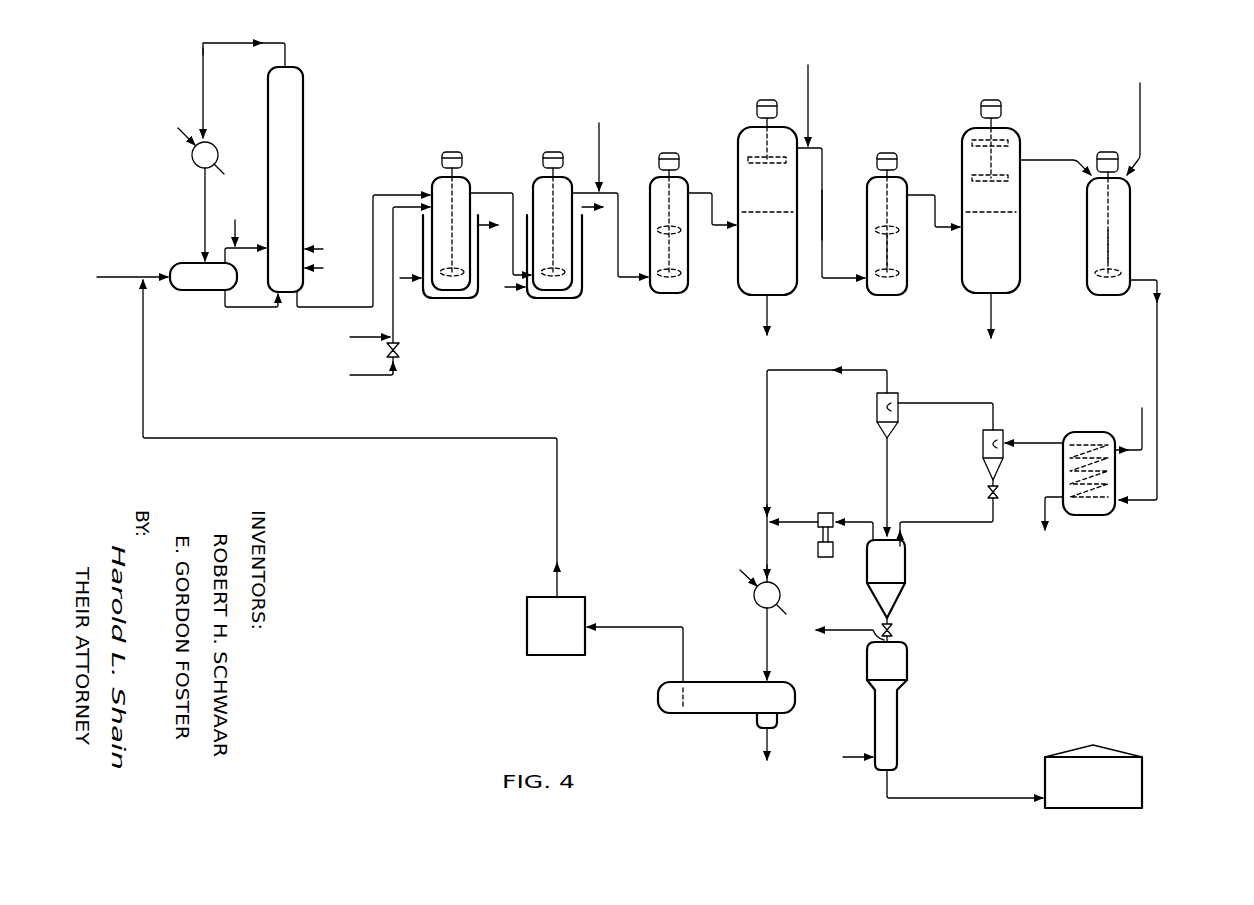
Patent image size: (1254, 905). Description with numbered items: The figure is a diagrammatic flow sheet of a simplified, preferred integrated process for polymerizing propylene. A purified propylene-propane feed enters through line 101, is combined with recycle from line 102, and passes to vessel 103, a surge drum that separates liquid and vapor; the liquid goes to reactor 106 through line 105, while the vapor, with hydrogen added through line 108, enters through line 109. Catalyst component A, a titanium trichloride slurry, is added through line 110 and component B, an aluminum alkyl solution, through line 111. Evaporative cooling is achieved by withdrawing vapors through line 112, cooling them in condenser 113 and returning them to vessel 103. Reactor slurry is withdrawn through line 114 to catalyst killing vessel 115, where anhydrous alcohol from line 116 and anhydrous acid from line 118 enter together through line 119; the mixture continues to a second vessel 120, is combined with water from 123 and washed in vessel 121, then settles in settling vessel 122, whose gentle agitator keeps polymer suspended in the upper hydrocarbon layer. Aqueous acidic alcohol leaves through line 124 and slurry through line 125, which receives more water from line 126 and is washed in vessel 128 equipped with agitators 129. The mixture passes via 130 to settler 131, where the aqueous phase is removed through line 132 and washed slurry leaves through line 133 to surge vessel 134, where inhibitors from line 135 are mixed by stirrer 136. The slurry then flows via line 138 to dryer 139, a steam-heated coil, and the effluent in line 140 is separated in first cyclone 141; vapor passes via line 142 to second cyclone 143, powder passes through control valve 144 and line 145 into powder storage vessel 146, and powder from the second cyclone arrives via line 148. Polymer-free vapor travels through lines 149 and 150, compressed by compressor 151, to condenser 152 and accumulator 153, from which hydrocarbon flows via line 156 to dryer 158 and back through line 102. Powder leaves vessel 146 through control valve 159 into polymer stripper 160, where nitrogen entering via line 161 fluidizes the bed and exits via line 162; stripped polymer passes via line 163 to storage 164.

The feed line 101 is at (105, 278).
The recycle line 102 is at (145, 318).
The surge vessel 103 is at (185, 263).
The liquid feed line 105 is at (233, 307).
The reactor 106 is at (305, 152).
The hydrogen line 108 is at (226, 205).
The vapor feed line 109 is at (232, 250).
The catalyst component A line 110 is at (330, 233).
The catalyst component B line 111 is at (356, 270).
The vapor withdrawal line 112 is at (250, 42).
The condenser 113 is at (194, 163).
The slurry withdrawal line 114 is at (356, 306).
The catalyst killing vessel 115 is at (426, 178).
The alcohol line 116 is at (371, 337).
The acid line 118 is at (371, 375).
The combined acid and alcohol line 119 is at (395, 323).
The second catalyst killing vessel 120 is at (534, 178).
The washing vessel 121 is at (652, 178).
The settling vessel 122 is at (737, 142).
The water line 123 is at (599, 136).
The alcohol layer withdrawal line 124 is at (766, 321).
The slurry withdrawal line 125 is at (822, 152).
The water line 126 is at (808, 95).
The washing vessel 128 is at (868, 186).
The agitators 129 is at (879, 262).
The transfer line 130 is at (926, 196).
The settler 131 is at (962, 168).
The aqueous phase removal line 132 is at (990, 322).
The washed slurry line 133 is at (1043, 162).
The surge vessel 134 is at (1087, 208).
The inhibitor line 135 is at (1141, 108).
The stirrer 136 is at (1103, 240).
The dryer feed line 138 is at (1158, 386).
The dryer 139 is at (1087, 432).
The dryer effluent line 140 is at (1054, 443).
The first cyclone 141 is at (995, 430).
The vapor line 142 is at (978, 403).
The second cyclone 143 is at (876, 414).
The control valve 144 is at (1000, 491).
The powder line 145 is at (955, 517).
The powder storage vessel 146 is at (905, 558).
The powder line 148 is at (887, 478).
The vapor line 149 is at (766, 395).
The vapor line 150 is at (845, 510).
The compressor 151 is at (825, 556).
The condenser 152 is at (753, 600).
The accumulator 153 is at (696, 716).
The hydrocarbon withdrawal line 156 is at (652, 626).
The dryer 158 is at (527, 610).
The control valve 159 is at (894, 629).
The polymer stripper 160 is at (907, 670).
The nitrogen inlet line 161 is at (855, 757).
The stripper outlet line 162 is at (848, 628).
The stripped polymer line 163 is at (962, 798).
The storage 164 is at (1045, 772).